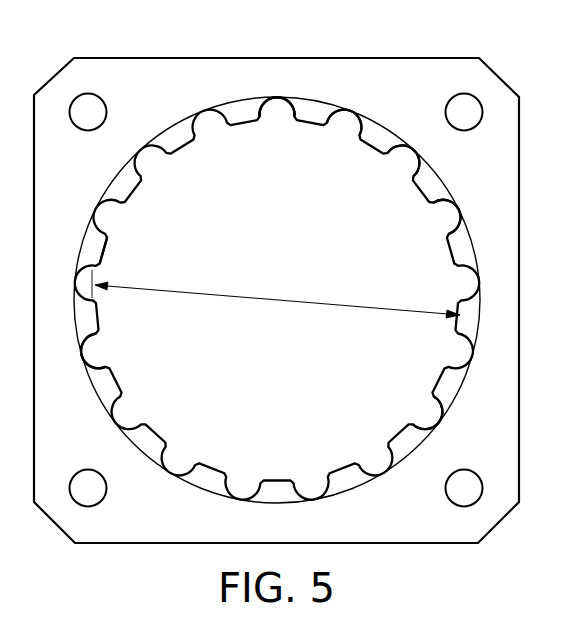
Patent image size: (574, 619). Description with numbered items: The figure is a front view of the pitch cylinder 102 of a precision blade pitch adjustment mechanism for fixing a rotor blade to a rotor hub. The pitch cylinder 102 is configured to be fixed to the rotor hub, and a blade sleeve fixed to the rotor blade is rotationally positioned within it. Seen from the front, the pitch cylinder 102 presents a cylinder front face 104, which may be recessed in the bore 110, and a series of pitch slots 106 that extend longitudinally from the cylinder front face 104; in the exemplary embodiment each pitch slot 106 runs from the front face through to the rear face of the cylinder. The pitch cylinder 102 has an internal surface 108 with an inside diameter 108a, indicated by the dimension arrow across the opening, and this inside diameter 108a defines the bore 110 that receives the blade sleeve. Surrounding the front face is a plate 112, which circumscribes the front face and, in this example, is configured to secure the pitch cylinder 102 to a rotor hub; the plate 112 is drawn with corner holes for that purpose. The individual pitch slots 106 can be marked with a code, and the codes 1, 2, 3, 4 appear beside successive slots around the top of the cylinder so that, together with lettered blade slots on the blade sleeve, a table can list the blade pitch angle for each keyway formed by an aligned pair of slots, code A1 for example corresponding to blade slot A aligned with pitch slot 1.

The pitch cylinder 102 is at (313, 58).
The plate 112 is at (413, 68).
The cylinder front face 104 is at (178, 136).
The pitch slot 106 is at (289, 108).
The internal surface 108 is at (108, 252).
The bore 110 is at (336, 260).
The inside diameter 108a is at (275, 303).
The pitch slot code 1 is at (277, 92).
The pitch slot code 2 is at (345, 110).
The pitch slot code 3 is at (413, 150).
The pitch slot code 4 is at (459, 213).